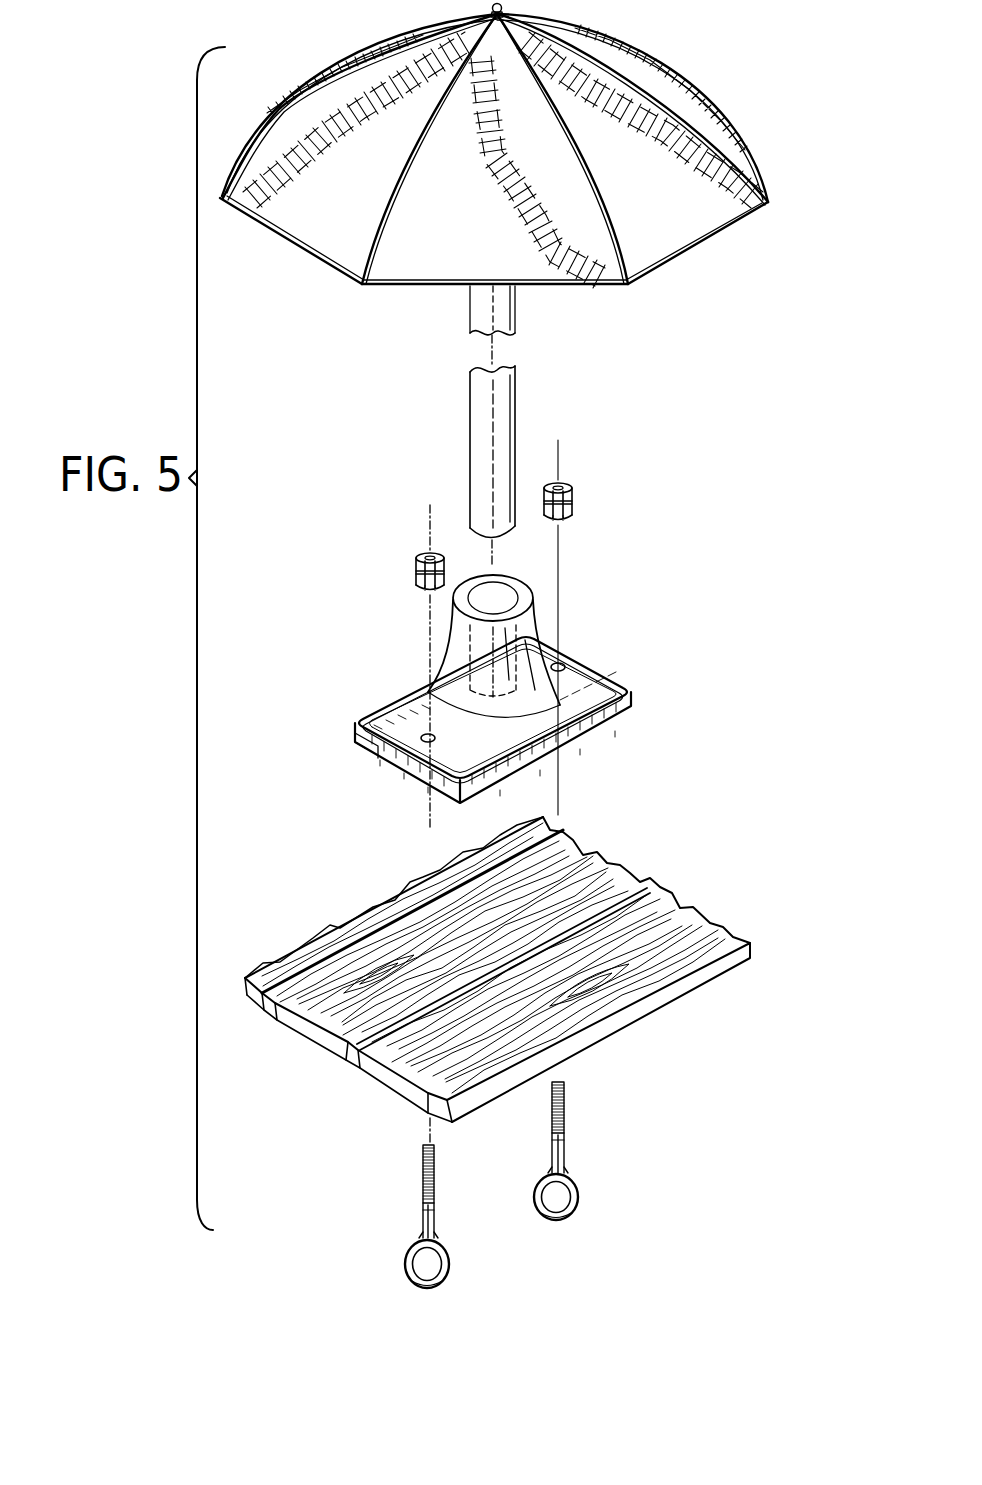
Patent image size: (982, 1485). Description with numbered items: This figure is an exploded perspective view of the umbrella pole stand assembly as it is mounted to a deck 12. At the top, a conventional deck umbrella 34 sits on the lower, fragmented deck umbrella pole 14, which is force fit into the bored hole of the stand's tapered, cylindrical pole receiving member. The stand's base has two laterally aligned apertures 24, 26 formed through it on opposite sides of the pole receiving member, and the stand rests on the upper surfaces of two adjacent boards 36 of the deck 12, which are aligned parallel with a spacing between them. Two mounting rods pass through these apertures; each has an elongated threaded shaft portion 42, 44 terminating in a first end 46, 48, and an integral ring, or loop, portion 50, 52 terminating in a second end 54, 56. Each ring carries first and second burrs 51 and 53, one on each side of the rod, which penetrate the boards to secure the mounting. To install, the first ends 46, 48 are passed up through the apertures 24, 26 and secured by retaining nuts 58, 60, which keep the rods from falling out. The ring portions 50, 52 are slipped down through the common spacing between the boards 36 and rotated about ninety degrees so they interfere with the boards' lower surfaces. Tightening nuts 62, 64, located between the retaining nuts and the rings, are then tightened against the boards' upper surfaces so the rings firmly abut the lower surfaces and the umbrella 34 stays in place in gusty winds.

The deck 12 is at (497, 969).
The deck umbrella pole 14 is at (503, 424).
The aperture 24 is at (485, 689).
The aperture 26 is at (560, 666).
The deck umbrella 34 is at (677, 227).
The boards 36 is at (678, 918).
The threaded shaft portion 42 is at (407, 1218).
The threaded shaft portion 44 is at (612, 1192).
The first end 46 is at (422, 1145).
The first end 48 is at (562, 1081).
The ring portion 50 is at (407, 1276).
The first burr 51 is at (437, 1240).
The ring portion 52 is at (612, 1238).
The second burr 53 is at (416, 1238).
The second end 54 is at (430, 1287).
The second end 56 is at (559, 1219).
The nut 58 is at (379, 824).
The nut 60 is at (598, 627).
The tightening nut 62 is at (415, 585).
The tightening nut 64 is at (572, 518).